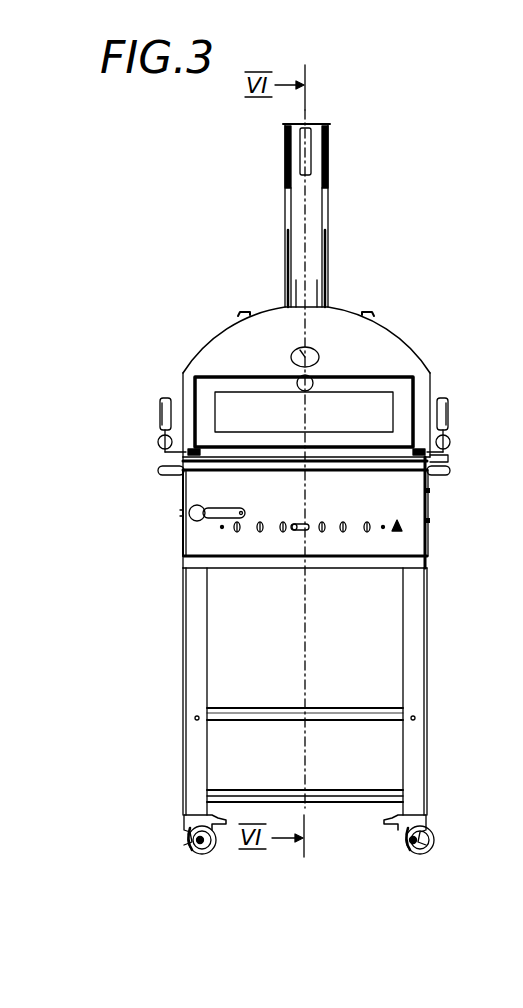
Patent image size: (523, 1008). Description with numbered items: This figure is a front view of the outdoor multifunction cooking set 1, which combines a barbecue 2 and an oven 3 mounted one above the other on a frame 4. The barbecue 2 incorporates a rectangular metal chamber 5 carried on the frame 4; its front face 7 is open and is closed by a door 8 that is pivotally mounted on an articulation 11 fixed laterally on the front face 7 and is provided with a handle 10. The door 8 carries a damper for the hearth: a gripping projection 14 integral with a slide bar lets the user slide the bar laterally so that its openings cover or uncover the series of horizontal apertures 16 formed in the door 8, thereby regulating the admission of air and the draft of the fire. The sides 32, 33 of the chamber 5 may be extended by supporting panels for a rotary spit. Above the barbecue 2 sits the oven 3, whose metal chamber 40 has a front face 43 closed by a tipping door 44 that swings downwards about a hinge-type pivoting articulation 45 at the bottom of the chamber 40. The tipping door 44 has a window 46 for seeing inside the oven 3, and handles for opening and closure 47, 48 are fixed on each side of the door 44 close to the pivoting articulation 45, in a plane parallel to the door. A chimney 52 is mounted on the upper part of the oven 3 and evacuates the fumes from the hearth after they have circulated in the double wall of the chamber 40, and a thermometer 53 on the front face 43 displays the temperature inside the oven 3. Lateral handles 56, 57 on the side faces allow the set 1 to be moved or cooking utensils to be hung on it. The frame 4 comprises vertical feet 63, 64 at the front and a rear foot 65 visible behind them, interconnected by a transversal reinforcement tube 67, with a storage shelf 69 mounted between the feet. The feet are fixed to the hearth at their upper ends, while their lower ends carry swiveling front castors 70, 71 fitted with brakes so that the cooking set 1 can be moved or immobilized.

The multifunction assembly 1 is at (176, 180).
The barbecue 2 is at (124, 515).
The oven 3 is at (157, 374).
The frame 4 is at (452, 664).
The chamber 5 is at (165, 540).
The front face 7 is at (398, 532).
The door 8 is at (402, 500).
The handle 10 is at (190, 513).
The articulation 11 is at (428, 540).
The gripping projection 14 is at (300, 531).
The horizontal apertures 16 is at (262, 533).
The side 32 is at (183, 492).
The side 33 is at (428, 490).
The metal chamber 40 is at (218, 333).
The front face 43 is at (382, 348).
The tipping door 44 is at (403, 388).
The pivoting articulation 45 is at (443, 458).
The window 46 is at (372, 408).
The handle for opening and closure 47 is at (160, 414).
The handle for opening and closure 48 is at (450, 410).
The chimney 52 is at (318, 200).
The thermometer 53 is at (296, 350).
The lateral handle 56 is at (160, 470).
The lateral handle 57 is at (450, 470).
The vertical foot 63 is at (197, 760).
The vertical foot 64 is at (417, 758).
The rear foot 65 is at (319, 691).
The transversal reinforcement tube 67 is at (340, 800).
The shelf 69 is at (372, 730).
The front castor 70 is at (195, 855).
The front castor 71 is at (425, 840).